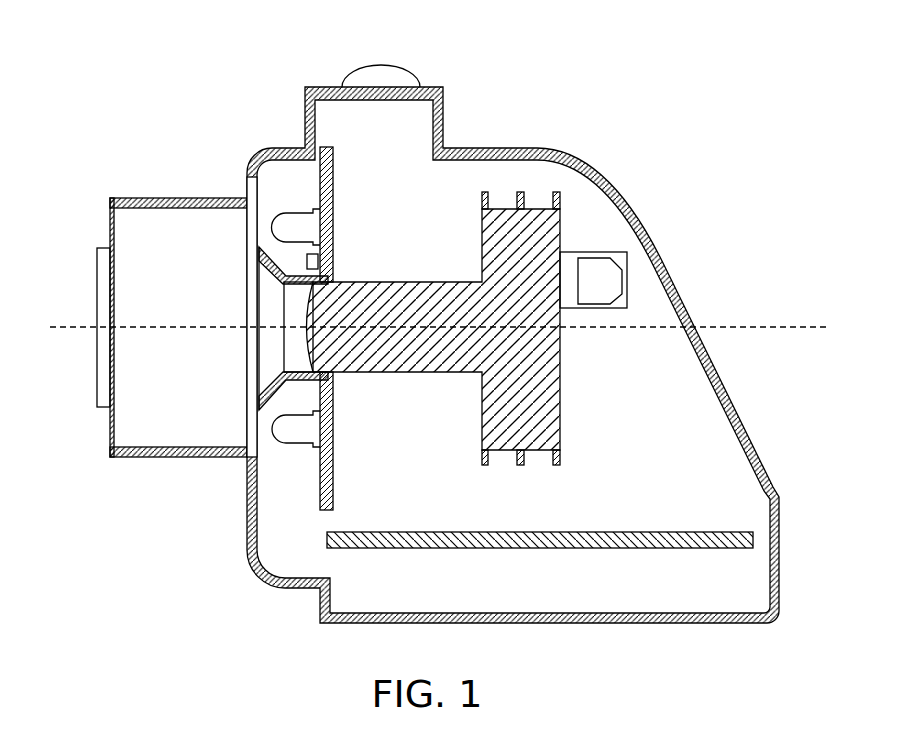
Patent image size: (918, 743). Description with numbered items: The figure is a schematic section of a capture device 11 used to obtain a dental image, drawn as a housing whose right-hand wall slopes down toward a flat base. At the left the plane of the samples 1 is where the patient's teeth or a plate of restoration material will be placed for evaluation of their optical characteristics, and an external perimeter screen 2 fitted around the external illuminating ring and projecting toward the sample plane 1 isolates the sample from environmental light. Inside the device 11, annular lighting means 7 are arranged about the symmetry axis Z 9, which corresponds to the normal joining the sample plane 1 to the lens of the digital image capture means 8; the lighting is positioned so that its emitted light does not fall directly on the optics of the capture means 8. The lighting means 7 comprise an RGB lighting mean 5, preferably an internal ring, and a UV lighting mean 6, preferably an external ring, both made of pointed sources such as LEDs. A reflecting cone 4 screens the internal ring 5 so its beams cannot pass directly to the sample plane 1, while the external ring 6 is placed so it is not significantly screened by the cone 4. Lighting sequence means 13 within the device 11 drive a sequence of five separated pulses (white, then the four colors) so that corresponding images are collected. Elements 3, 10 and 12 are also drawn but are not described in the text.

The plane of the samples 1 is at (101, 263).
The external perimeter screen 2 is at (188, 458).
The mounting plate 3 is at (247, 297).
The reflecting cone 4 is at (260, 393).
The RGB lighting mean 5 is at (313, 265).
The UV lighting mean 6 is at (310, 227).
The annular lighting means 7 is at (330, 453).
The digital image capture means 8 is at (315, 333).
The symmetry axis Z 9 is at (742, 329).
The connector 10 is at (587, 275).
The capture device 11 is at (680, 297).
The push button 12 is at (408, 79).
The lighting sequence means 13 is at (642, 537).